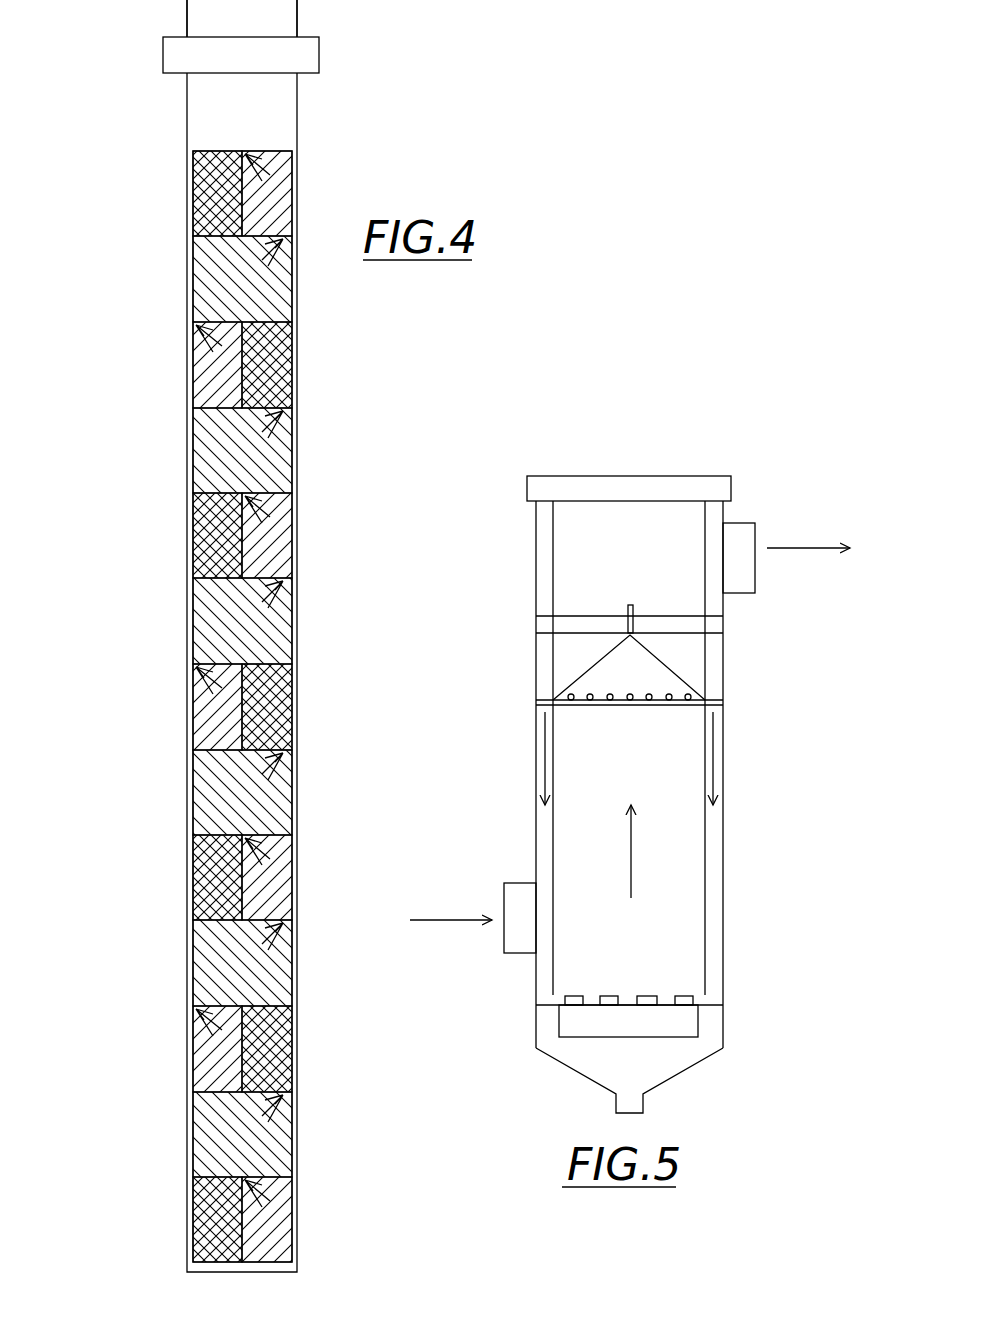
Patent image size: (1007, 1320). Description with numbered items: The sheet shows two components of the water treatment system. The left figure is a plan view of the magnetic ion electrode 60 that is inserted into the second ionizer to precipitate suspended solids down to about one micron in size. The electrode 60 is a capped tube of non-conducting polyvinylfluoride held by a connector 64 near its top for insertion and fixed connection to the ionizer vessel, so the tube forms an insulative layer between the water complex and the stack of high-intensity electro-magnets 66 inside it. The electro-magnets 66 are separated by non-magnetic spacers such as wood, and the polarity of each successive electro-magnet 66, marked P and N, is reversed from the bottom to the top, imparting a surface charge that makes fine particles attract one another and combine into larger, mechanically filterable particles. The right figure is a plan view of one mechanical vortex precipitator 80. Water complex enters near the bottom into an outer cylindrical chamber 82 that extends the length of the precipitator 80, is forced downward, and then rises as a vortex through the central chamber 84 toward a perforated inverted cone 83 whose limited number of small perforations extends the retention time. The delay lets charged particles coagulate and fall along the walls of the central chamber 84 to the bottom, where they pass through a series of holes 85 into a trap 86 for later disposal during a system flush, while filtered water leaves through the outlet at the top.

In FIG. 4, the electrode 60 is at (126, 77).
In FIG. 4, the connector 64 is at (313, 50).
In FIG. 4, the electro-magnets 66 is at (193, 222).
In FIG. 5, the mechanical vortex precipitator 80 is at (565, 430).
In FIG. 5, the outer cylindrical chamber 82 is at (716, 935).
In FIG. 5, the perforated inverted cone 83 is at (663, 676).
In FIG. 5, the central chamber 84 is at (693, 754).
In FIG. 5, the holes 85 is at (607, 1010).
In FIG. 5, the trap 86 is at (665, 1072).